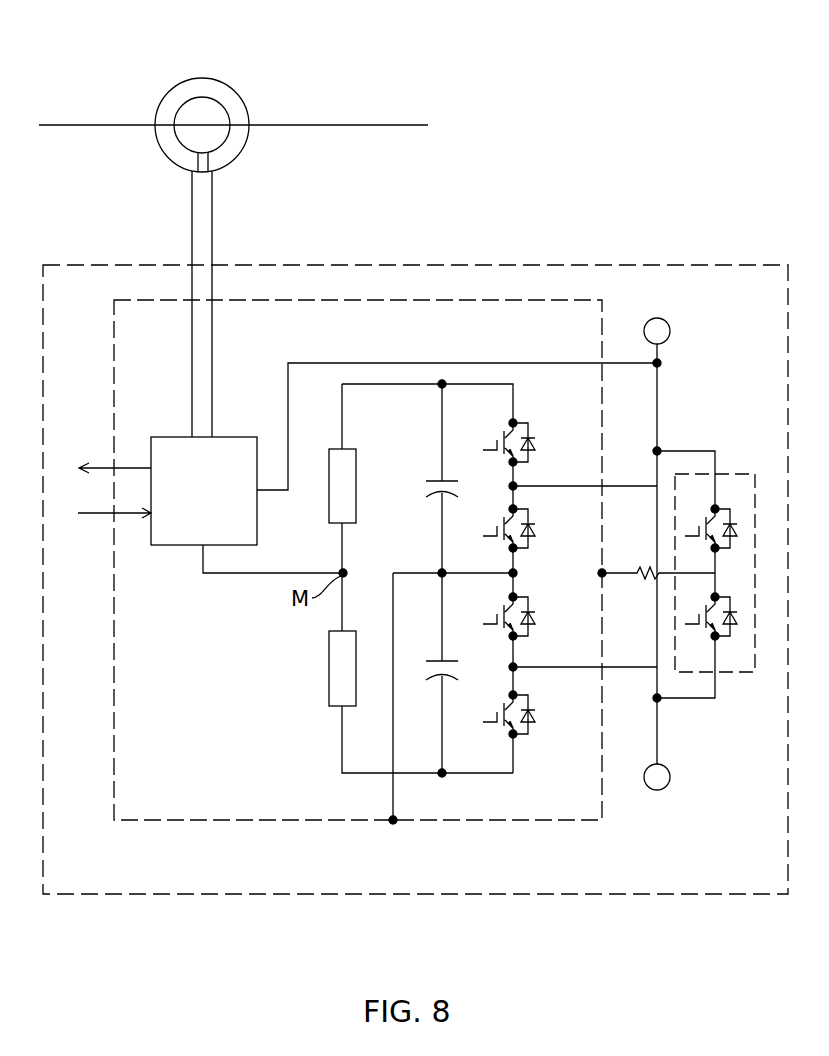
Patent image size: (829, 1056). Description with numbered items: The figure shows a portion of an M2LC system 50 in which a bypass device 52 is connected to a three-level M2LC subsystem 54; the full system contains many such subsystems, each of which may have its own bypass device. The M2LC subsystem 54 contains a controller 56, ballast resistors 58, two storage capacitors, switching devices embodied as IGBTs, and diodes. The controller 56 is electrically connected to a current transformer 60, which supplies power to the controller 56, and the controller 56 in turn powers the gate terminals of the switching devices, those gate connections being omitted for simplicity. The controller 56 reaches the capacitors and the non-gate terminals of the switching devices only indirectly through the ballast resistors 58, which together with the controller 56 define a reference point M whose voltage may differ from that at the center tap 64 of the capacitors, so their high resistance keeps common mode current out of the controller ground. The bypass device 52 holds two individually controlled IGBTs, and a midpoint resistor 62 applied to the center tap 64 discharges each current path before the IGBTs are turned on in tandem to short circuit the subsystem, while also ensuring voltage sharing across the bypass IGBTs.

The M2LC system 50 is at (680, 265).
The bypass device 52 is at (733, 672).
The three-level M2LC subsystem 54 is at (113, 732).
The controller 56 is at (214, 501).
The ballast resistors 58 is at (333, 490).
The current transformer 60 is at (201, 78).
The midpoint resistor 62 is at (642, 568).
The center tap 64 is at (441, 572).